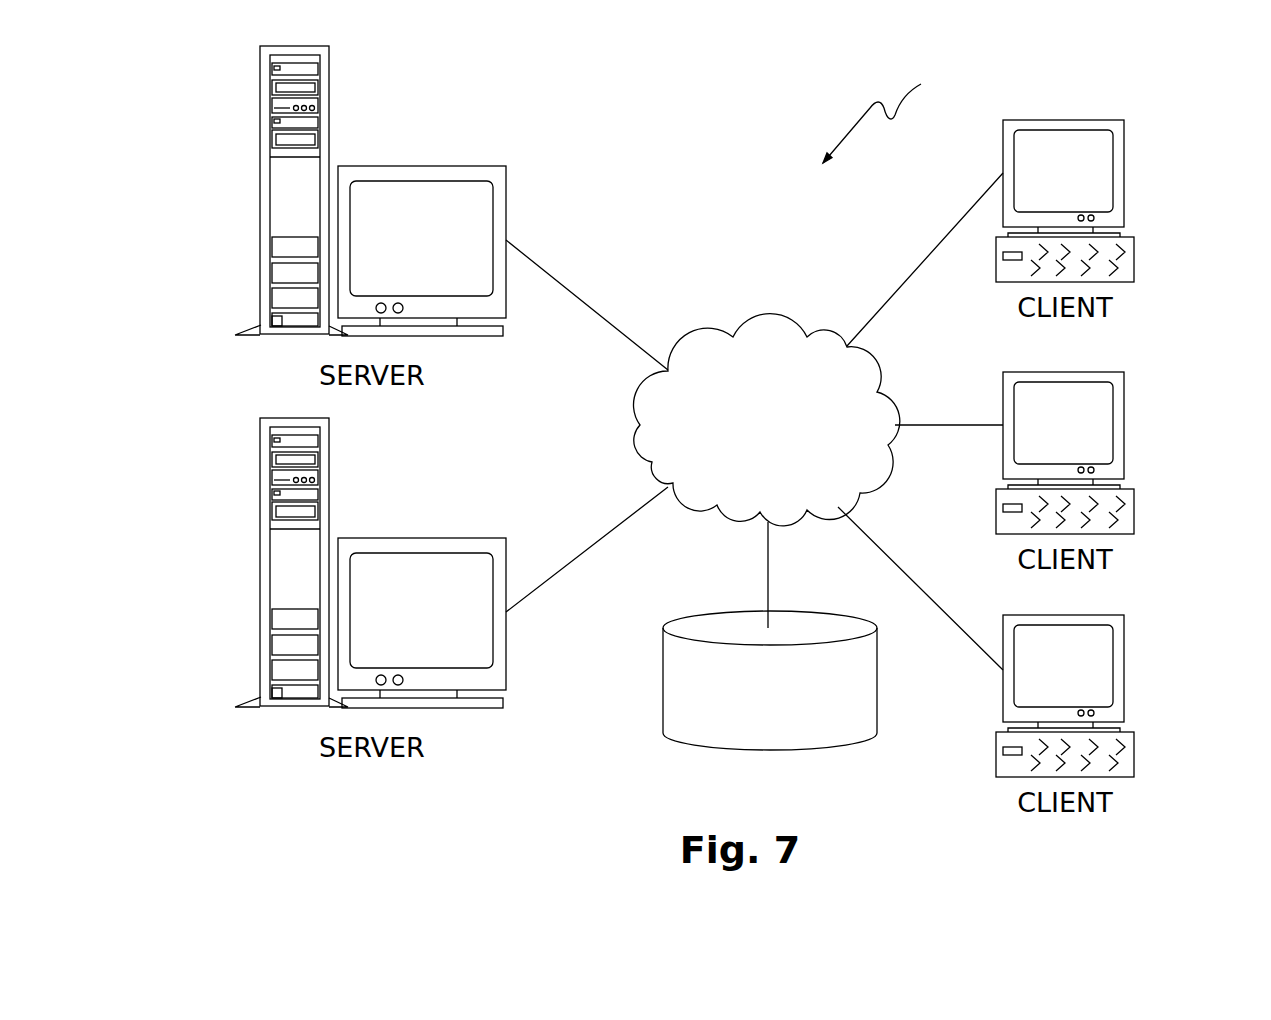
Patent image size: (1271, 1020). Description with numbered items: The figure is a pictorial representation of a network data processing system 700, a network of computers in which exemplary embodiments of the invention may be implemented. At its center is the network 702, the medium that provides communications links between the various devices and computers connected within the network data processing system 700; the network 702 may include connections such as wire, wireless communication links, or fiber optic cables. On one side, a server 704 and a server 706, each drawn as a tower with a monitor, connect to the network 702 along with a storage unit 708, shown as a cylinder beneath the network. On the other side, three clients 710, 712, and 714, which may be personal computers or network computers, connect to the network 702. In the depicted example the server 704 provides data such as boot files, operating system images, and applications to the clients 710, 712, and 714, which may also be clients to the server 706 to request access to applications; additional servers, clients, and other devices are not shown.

The network data processing system 700 is at (899, 117).
The network 702 is at (732, 332).
The server 704 is at (259, 192).
The server 706 is at (258, 562).
The storage unit 708 is at (663, 695).
The client 710 is at (1124, 172).
The client 712 is at (1124, 425).
The client 714 is at (1124, 670).